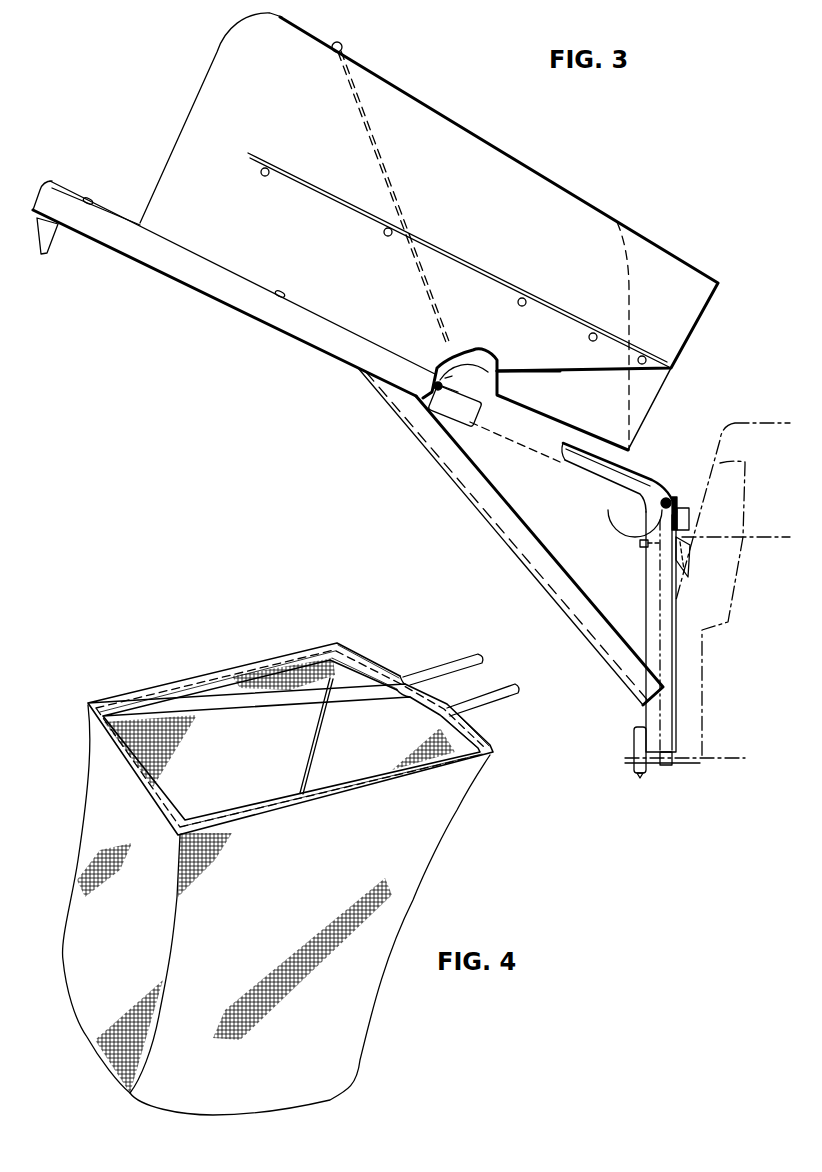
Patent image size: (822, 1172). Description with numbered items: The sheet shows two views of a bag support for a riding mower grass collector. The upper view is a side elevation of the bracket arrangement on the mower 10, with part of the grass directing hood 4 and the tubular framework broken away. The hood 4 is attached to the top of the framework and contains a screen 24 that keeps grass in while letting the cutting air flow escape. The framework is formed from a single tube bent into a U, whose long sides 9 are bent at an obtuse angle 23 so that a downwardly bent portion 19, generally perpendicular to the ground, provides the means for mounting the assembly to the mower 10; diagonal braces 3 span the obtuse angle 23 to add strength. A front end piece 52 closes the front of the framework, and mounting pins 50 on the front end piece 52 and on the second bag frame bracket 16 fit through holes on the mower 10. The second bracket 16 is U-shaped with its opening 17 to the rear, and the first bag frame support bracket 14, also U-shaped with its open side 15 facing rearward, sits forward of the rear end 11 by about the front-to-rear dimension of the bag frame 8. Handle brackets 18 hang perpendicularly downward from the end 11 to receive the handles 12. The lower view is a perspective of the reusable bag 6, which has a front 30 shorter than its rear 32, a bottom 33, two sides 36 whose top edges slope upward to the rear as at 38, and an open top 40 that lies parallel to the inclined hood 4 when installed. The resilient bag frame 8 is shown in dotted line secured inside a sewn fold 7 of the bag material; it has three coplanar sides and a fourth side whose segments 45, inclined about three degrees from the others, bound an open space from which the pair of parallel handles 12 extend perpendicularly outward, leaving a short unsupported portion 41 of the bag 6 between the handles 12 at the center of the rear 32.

In FIG. 3, the diagonal braces 3 is at (500, 530).
In FIG. 3, the grass directing hood 4 is at (333, 43).
In FIG. 4, the reusable bag 6 is at (88, 831).
In FIG. 4, the fold 7 is at (275, 685).
In FIG. 4, the bag frame 8 is at (158, 690).
In FIG. 3, the long sides 9 is at (572, 465).
In FIG. 3, the mower 10 is at (743, 414).
In FIG. 3, the end 11 is at (40, 214).
In FIG. 4, the handles 12 is at (475, 665).
In FIG. 3, the first bag frame support bracket 14 is at (481, 415).
In FIG. 3, the open side 15 is at (442, 402).
In FIG. 3, the second bag frame bracket 16 is at (642, 486).
In FIG. 3, the opening 17 is at (690, 505).
In FIG. 3, the handle brackets 18 is at (56, 232).
In FIG. 3, the downwardly bent portion 19 is at (652, 597).
In FIG. 3, the obtuse angle 23 is at (613, 525).
In FIG. 3, the screen 24 is at (371, 141).
In FIG. 4, the front 30 is at (130, 959).
In FIG. 4, the rear 32 is at (455, 815).
In FIG. 4, the bottom 33 is at (293, 1108).
In FIG. 4, the sides 36 is at (322, 889).
In FIG. 4, the sloping top edge 38 is at (238, 663).
In FIG. 4, the open top 40 is at (245, 779).
In FIG. 4, the short portion 41 is at (433, 700).
In FIG. 4, the segments 45 is at (368, 665).
In FIG. 3, the mounting pins 50 is at (683, 498).
In FIG. 3, the front end piece 52 is at (664, 766).